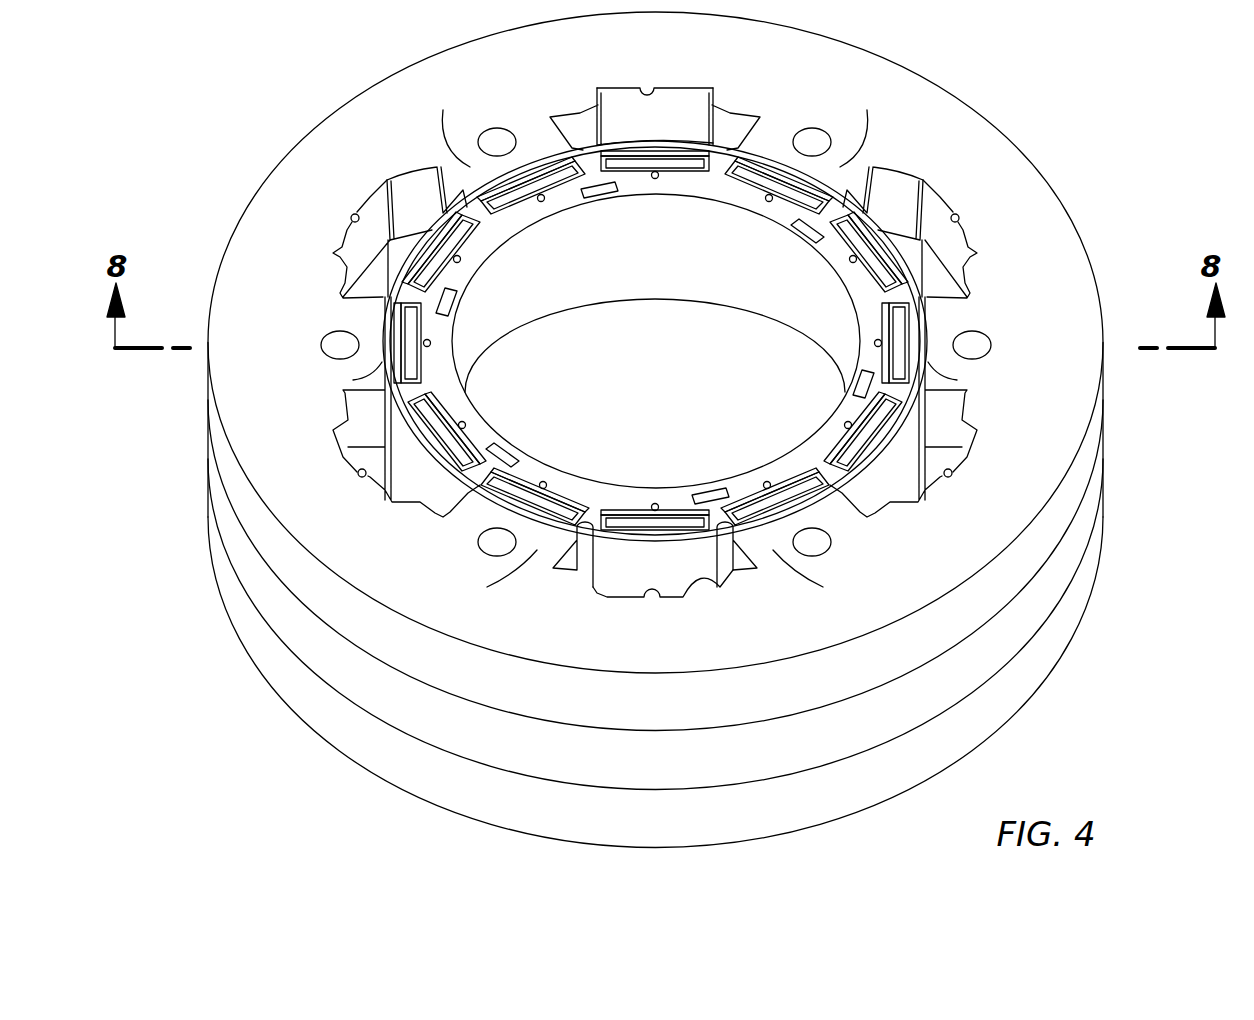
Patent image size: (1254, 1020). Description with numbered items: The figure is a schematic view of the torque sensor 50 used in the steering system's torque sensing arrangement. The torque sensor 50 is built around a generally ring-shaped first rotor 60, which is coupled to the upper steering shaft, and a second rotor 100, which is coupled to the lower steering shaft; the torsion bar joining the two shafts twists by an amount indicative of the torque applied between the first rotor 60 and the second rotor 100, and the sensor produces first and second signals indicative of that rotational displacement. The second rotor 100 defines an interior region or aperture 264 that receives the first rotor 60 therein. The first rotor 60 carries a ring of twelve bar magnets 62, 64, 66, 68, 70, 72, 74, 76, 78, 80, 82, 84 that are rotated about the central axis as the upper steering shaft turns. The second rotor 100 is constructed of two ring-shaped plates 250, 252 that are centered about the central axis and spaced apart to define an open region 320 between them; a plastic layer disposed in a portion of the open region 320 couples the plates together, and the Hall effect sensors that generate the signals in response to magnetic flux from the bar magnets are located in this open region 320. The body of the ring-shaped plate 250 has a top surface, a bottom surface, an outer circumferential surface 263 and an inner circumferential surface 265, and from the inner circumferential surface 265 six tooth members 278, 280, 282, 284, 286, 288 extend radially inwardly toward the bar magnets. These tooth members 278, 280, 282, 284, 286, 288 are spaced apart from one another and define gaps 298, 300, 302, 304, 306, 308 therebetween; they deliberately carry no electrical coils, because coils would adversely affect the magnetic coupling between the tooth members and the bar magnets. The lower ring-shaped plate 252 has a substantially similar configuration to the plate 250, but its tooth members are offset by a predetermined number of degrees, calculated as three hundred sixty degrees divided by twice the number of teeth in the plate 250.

The torque sensor 50 is at (950, 67).
The second rotor 100 is at (1022, 147).
The ring-shaped plate 250 is at (1106, 332).
The ring-shaped plate 252 is at (1035, 672).
The outer circumferential surface 263 is at (1106, 454).
The open region 320 is at (1060, 588).
The aperture 264 is at (357, 248).
The inner circumferential surface 265 is at (684, 584).
The first rotor 60 is at (720, 156).
The bar magnet 62 is at (740, 185).
The bar magnet 64 is at (840, 235).
The bar magnet 66 is at (888, 325).
The bar magnet 68 is at (862, 432).
The bar magnet 70 is at (795, 490).
The bar magnet 72 is at (677, 522).
The bar magnet 74 is at (553, 505).
The bar magnet 76 is at (452, 422).
The bar magnet 78 is at (425, 318).
The bar magnet 80 is at (470, 235).
The bar magnet 82 is at (580, 186).
The bar magnet 84 is at (685, 172).
The tooth member 278 is at (840, 163).
The tooth member 280 is at (957, 380).
The tooth member 282 is at (792, 568).
The tooth member 284 is at (520, 567).
The tooth member 286 is at (353, 380).
The tooth member 288 is at (468, 162).
The gap 298 is at (955, 222).
The gap 300 is at (946, 478).
The gap 302 is at (650, 600).
The gap 304 is at (364, 478).
The gap 306 is at (360, 220).
The gap 308 is at (648, 88).